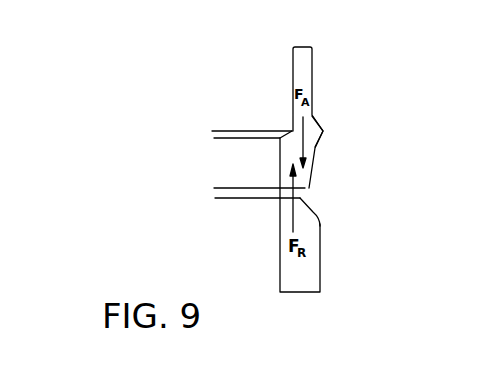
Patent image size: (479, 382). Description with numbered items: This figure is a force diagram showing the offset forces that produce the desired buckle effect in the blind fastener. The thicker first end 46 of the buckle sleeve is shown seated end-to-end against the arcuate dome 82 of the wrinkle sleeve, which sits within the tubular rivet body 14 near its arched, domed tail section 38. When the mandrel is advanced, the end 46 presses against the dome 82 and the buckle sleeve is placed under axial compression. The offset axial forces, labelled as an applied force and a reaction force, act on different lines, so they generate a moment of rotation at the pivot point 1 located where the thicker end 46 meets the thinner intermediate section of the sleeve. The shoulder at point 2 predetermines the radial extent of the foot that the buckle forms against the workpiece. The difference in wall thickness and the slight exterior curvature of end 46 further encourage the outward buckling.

The pivot point 1 is at (290, 128).
The shoulder point 2 is at (313, 115).
The rivet body 14 is at (290, 270).
The tail section 38 is at (317, 218).
The first thicker end 46 is at (316, 148).
The arcuate dome 82 is at (303, 189).